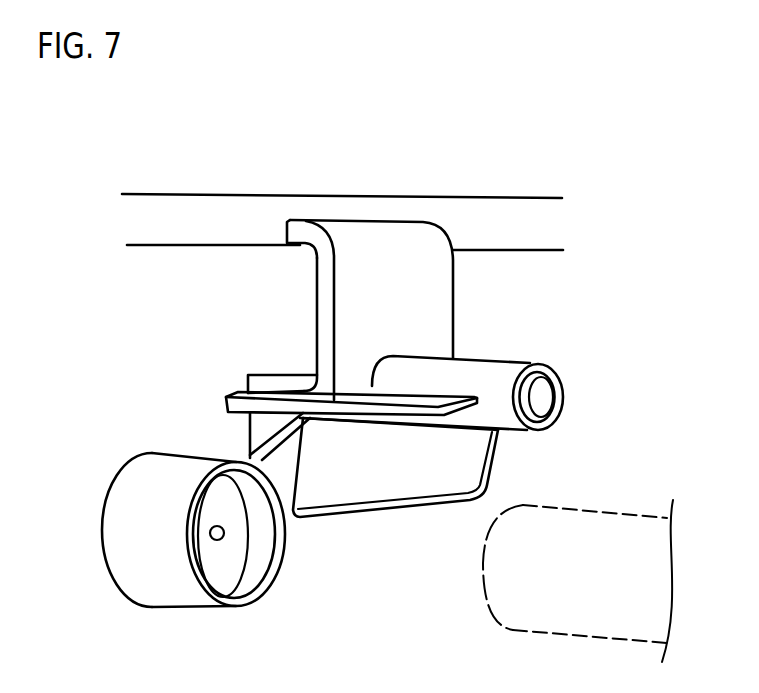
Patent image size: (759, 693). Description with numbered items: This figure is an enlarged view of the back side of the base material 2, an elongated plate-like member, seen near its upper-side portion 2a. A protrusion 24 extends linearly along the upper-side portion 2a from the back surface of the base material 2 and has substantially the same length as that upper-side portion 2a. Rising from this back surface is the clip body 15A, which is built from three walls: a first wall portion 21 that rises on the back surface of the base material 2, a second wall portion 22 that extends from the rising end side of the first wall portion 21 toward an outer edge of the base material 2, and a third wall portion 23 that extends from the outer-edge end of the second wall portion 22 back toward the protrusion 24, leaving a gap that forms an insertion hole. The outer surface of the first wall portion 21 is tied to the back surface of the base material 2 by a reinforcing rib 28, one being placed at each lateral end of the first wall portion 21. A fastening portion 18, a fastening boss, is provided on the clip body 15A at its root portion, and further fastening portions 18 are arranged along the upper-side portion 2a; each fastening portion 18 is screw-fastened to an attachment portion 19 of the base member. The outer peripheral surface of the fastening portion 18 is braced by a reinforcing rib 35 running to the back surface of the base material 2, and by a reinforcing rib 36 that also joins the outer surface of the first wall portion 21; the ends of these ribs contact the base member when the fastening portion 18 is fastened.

The base material 2 is at (190, 317).
The upper-side portion 2a is at (190, 192).
The clip body 15A is at (455, 253).
The fastening portion 18 is at (517, 360).
The attachment portion 19 is at (575, 510).
The first wall portion 21 is at (287, 388).
The second wall portion 22 is at (400, 287).
The third wall portion 23 is at (297, 232).
The protrusion 24 is at (507, 225).
The reinforcing rib 28 is at (258, 434).
The reinforcing rib 35 is at (423, 480).
The reinforcing rib 36 is at (356, 414).